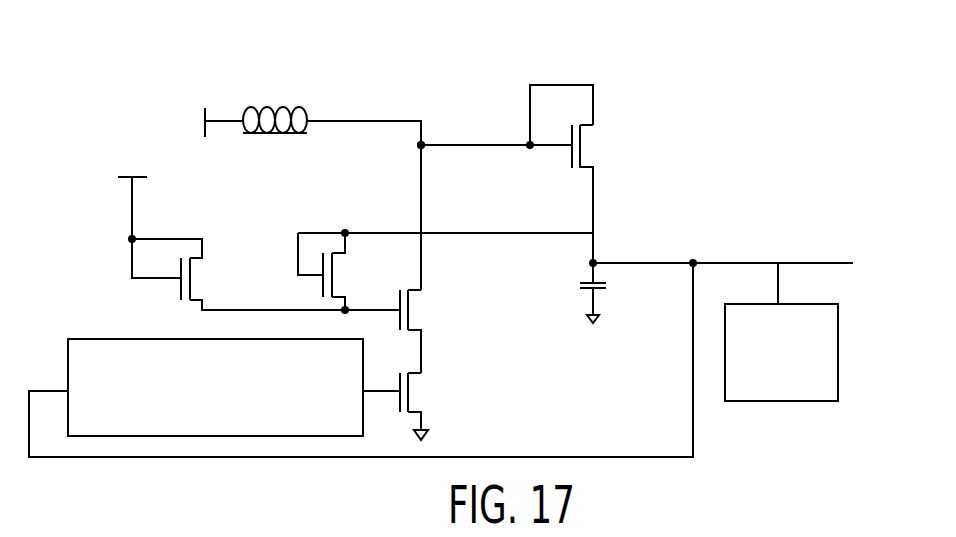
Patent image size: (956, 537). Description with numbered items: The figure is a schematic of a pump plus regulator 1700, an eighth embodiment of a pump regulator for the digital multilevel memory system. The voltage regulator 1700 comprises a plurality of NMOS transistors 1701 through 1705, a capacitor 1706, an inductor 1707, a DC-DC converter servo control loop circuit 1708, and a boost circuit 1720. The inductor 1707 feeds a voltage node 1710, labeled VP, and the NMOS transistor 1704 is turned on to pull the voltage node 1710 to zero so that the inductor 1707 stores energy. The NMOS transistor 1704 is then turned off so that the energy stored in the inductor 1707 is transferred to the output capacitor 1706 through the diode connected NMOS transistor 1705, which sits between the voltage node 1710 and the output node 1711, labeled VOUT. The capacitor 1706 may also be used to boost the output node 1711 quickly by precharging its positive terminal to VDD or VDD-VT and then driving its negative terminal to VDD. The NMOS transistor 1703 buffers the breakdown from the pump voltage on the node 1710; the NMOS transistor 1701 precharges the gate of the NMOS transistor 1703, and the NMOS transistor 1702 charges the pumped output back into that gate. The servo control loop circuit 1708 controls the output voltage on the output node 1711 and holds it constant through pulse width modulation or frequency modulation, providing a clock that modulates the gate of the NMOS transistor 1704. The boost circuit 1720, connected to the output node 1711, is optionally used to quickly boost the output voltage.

The pump plus regulator 1700 is at (684, 54).
The NMOS transistor 1701 is at (197, 280).
The NMOS transistor 1702 is at (378, 271).
The NMOS transistor 1703 is at (460, 291).
The NMOS transistor 1704 is at (418, 393).
The diode connected NMOS transistor 1705 is at (586, 142).
The output capacitor 1706 is at (607, 289).
The inductor 1707 is at (297, 108).
The DC-DC converter servo control loop circuit 1708 is at (215, 387).
The voltage node 1710 is at (460, 131).
The output node 1711 is at (592, 262).
The boost circuit 1720 is at (781, 352).